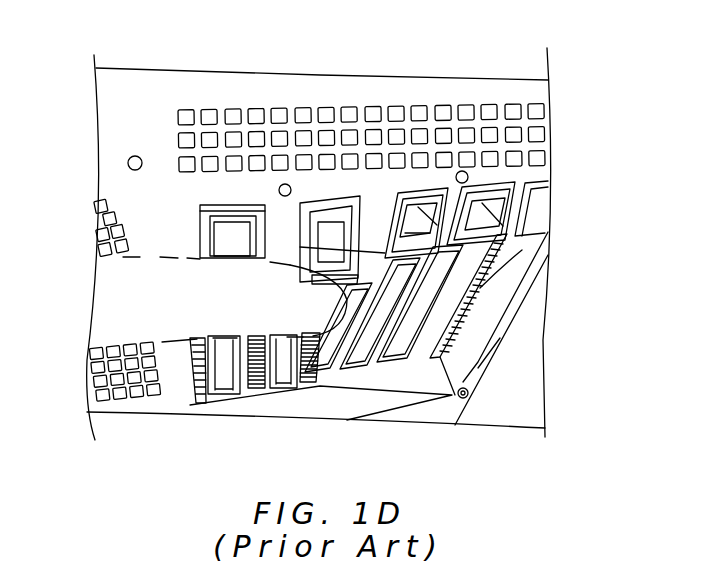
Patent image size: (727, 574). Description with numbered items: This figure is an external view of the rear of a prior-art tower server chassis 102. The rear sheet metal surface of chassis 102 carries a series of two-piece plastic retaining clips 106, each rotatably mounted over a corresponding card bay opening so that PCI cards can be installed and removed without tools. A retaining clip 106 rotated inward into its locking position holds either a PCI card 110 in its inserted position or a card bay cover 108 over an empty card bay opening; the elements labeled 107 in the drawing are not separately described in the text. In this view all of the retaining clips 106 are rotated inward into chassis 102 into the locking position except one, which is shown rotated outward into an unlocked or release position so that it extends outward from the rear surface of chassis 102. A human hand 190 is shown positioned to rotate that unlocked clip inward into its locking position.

The computer server chassis 102 is at (403, 97).
The two-piece plastic card retaining clip 106 is at (497, 247).
The connectors 107 is at (233, 202).
The card bay cover 108 is at (227, 380).
The PCI card 110 is at (283, 370).
The human hand 190 is at (113, 302).